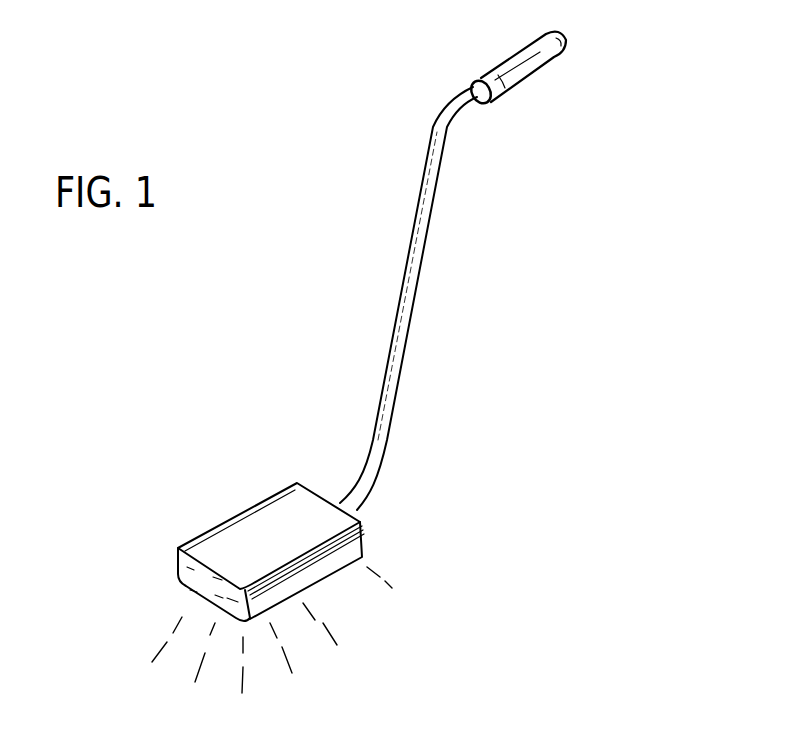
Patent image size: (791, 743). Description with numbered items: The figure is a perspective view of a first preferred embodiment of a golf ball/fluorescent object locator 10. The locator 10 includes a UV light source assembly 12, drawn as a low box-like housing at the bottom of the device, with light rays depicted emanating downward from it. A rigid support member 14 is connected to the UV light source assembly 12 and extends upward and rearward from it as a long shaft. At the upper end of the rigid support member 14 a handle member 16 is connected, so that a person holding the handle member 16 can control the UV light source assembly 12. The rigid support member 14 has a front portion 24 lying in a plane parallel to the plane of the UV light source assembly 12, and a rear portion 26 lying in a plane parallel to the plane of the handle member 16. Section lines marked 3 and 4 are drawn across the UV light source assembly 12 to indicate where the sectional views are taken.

The golf ball/fluorescent object locator 10 is at (354, 226).
The UV light source assembly 12 is at (172, 530).
The rigid support member 14 is at (403, 338).
The handle member 16 is at (500, 87).
The front portion 24 is at (343, 508).
The rear portion 26 is at (468, 83).
The section line 3- 3 is at (394, 496).
The section line 4- 4 is at (168, 502).